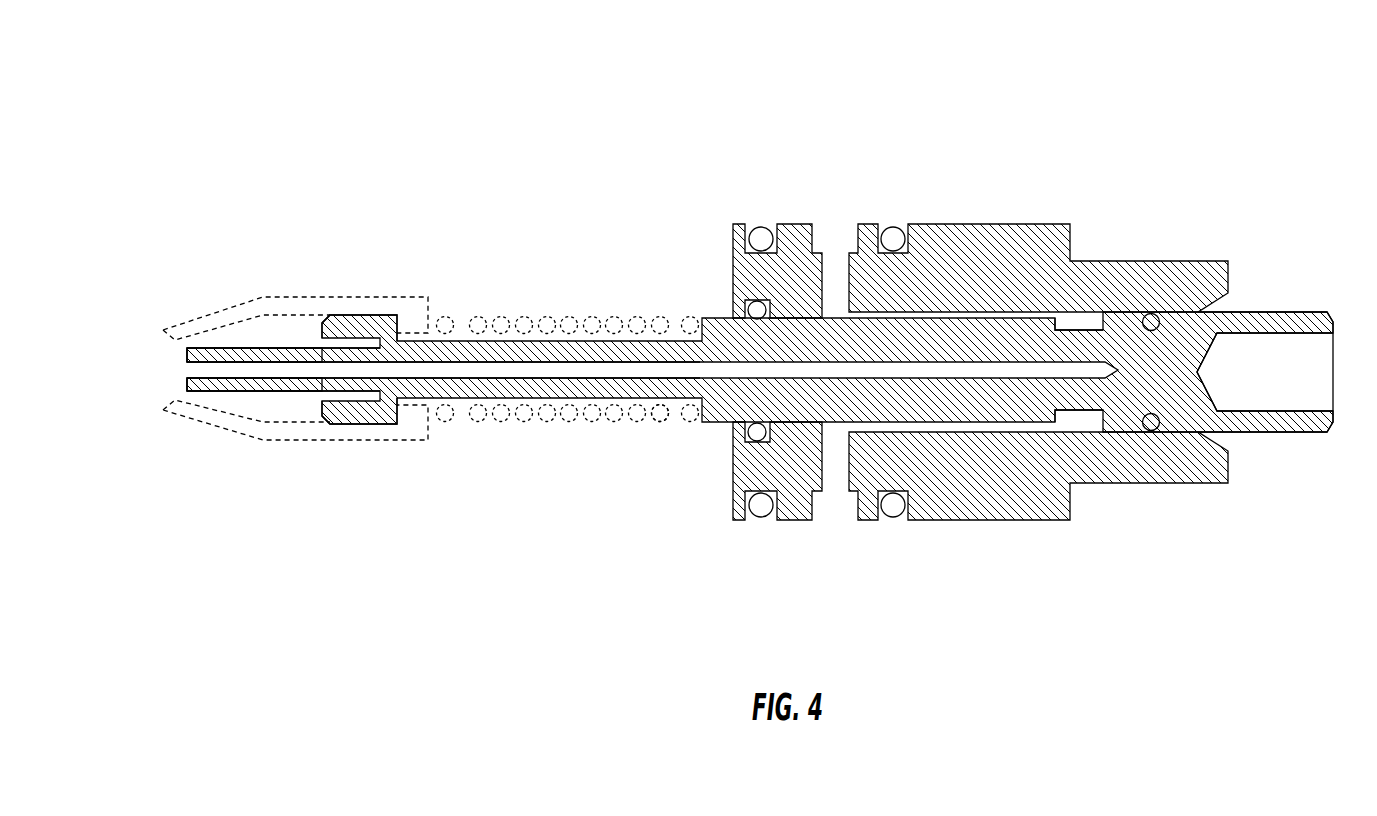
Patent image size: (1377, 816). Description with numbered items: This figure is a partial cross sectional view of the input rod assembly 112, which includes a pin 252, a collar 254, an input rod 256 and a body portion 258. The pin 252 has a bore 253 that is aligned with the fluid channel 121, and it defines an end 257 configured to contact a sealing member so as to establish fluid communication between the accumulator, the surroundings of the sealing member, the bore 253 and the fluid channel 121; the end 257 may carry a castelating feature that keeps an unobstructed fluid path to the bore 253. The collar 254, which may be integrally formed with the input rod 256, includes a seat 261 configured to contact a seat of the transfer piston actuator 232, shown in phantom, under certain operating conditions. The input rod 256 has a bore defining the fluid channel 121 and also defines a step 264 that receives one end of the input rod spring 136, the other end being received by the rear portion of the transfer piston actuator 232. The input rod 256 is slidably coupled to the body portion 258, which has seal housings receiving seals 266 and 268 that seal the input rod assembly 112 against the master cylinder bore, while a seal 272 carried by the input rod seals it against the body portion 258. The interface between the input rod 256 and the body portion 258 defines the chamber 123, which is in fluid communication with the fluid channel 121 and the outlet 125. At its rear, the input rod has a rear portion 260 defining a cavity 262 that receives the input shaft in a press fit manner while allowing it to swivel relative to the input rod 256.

The input rod assembly 112 is at (326, 104).
The transfer piston actuator 232 is at (316, 297).
The input rod 256 is at (514, 317).
The fluid channel 121 is at (647, 368).
The seal 266 is at (766, 228).
The seal 268 is at (895, 230).
The body portion 258 is at (1005, 224).
The seal 272 is at (1153, 313).
The rear portion 260 is at (1265, 312).
The cavity 262 is at (1272, 395).
The end 257 is at (188, 381).
The pin 252 is at (262, 344).
The bore 253 is at (255, 382).
The seat 261 is at (323, 410).
The collar 254 is at (380, 424).
The input rod spring 136 is at (661, 421).
The step 264 is at (702, 420).
The outlet 125 is at (852, 505).
The chamber 123 is at (1080, 428).